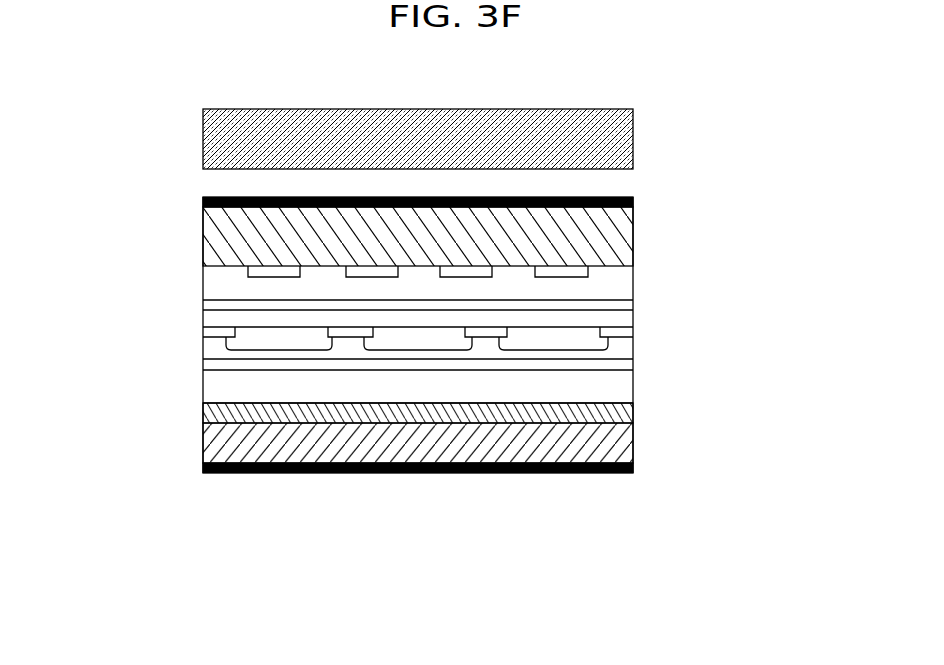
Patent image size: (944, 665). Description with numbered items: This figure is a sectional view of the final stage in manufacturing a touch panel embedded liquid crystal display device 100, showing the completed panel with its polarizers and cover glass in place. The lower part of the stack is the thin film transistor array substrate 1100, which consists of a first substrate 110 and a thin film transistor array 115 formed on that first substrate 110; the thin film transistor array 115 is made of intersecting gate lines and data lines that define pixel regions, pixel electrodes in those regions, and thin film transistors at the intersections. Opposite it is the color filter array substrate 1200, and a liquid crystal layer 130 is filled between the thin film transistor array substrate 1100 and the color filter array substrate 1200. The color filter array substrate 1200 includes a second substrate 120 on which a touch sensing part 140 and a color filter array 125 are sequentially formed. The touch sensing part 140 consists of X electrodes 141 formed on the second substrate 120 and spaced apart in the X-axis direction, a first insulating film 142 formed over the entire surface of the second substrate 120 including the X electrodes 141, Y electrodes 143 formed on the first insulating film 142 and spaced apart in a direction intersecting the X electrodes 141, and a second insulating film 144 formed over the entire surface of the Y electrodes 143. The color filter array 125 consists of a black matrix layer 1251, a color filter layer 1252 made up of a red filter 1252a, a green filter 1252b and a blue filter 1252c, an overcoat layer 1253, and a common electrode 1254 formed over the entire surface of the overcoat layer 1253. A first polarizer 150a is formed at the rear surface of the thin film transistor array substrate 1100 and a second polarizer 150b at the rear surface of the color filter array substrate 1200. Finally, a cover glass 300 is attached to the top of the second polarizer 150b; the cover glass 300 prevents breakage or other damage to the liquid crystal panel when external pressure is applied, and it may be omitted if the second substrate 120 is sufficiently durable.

The cover glass 300 is at (634, 141).
The display device 100 is at (440, 337).
The second polarizer 150b is at (634, 201).
The color filter array substrate 1200 is at (341, 288).
The second substrate 120 is at (203, 234).
The touch sensing part 140 is at (368, 303).
The X electrodes 141 is at (248, 272).
The first insulating film 142 is at (203, 289).
The Y electrodes 143 is at (203, 306).
The second insulating film 144 is at (390, 331).
The liquid crystal layer 130 is at (634, 386).
The thin film transistor array substrate 1100 is at (496, 433).
The thin film transistor array 115 is at (634, 412).
The first substrate 110 is at (634, 440).
The first polarizer 150a is at (634, 468).
The color filter array 125 is at (413, 460).
The black matrix layer 1251 is at (578, 441).
The color filter layer 1252 is at (417, 445).
The red filter 1252a is at (280, 342).
The green filter 1252b is at (425, 340).
The blue filter 1252c is at (555, 340).
The overcoat layer 1253 is at (238, 356).
The common electrode 1254 is at (262, 366).